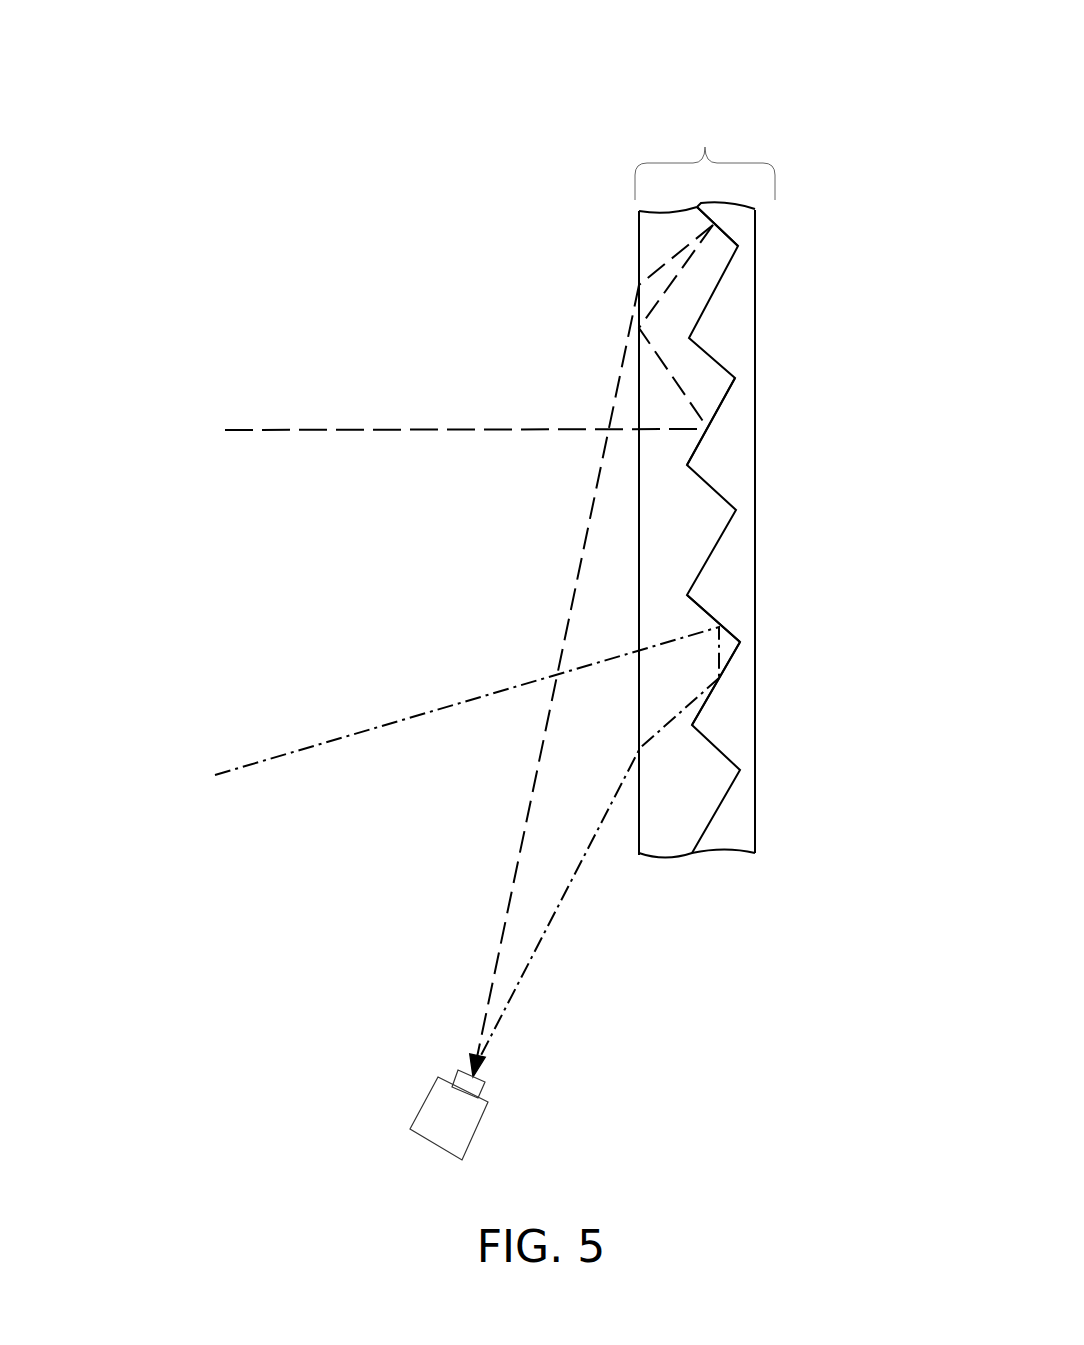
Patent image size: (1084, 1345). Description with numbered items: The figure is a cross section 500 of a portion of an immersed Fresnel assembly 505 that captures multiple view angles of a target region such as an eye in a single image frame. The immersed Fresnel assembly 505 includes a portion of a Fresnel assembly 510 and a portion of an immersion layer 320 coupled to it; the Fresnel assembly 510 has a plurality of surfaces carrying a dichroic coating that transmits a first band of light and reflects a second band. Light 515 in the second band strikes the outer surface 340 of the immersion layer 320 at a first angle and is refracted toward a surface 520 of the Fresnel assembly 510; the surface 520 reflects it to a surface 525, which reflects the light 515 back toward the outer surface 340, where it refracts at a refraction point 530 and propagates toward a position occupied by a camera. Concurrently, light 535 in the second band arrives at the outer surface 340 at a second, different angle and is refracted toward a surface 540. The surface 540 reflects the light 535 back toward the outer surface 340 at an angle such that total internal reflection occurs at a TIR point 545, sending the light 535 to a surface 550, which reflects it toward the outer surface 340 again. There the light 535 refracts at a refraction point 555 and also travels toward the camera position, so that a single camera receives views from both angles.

The cross section 500 is at (44, 102).
The immersed Fresnel assembly 505 is at (705, 441).
The Fresnel assembly 510 is at (732, 320).
The immersion layer 320 is at (663, 252).
The outer surface 340 is at (639, 509).
The surface 550 is at (713, 225).
The refraction point 555 is at (639, 285).
The TIR point 545 is at (639, 328).
The surface 540 is at (707, 427).
The light 535 is at (260, 430).
The surface 520 is at (718, 627).
The surface 525 is at (717, 680).
The light 515 is at (255, 762).
The refraction point 530 is at (640, 748).